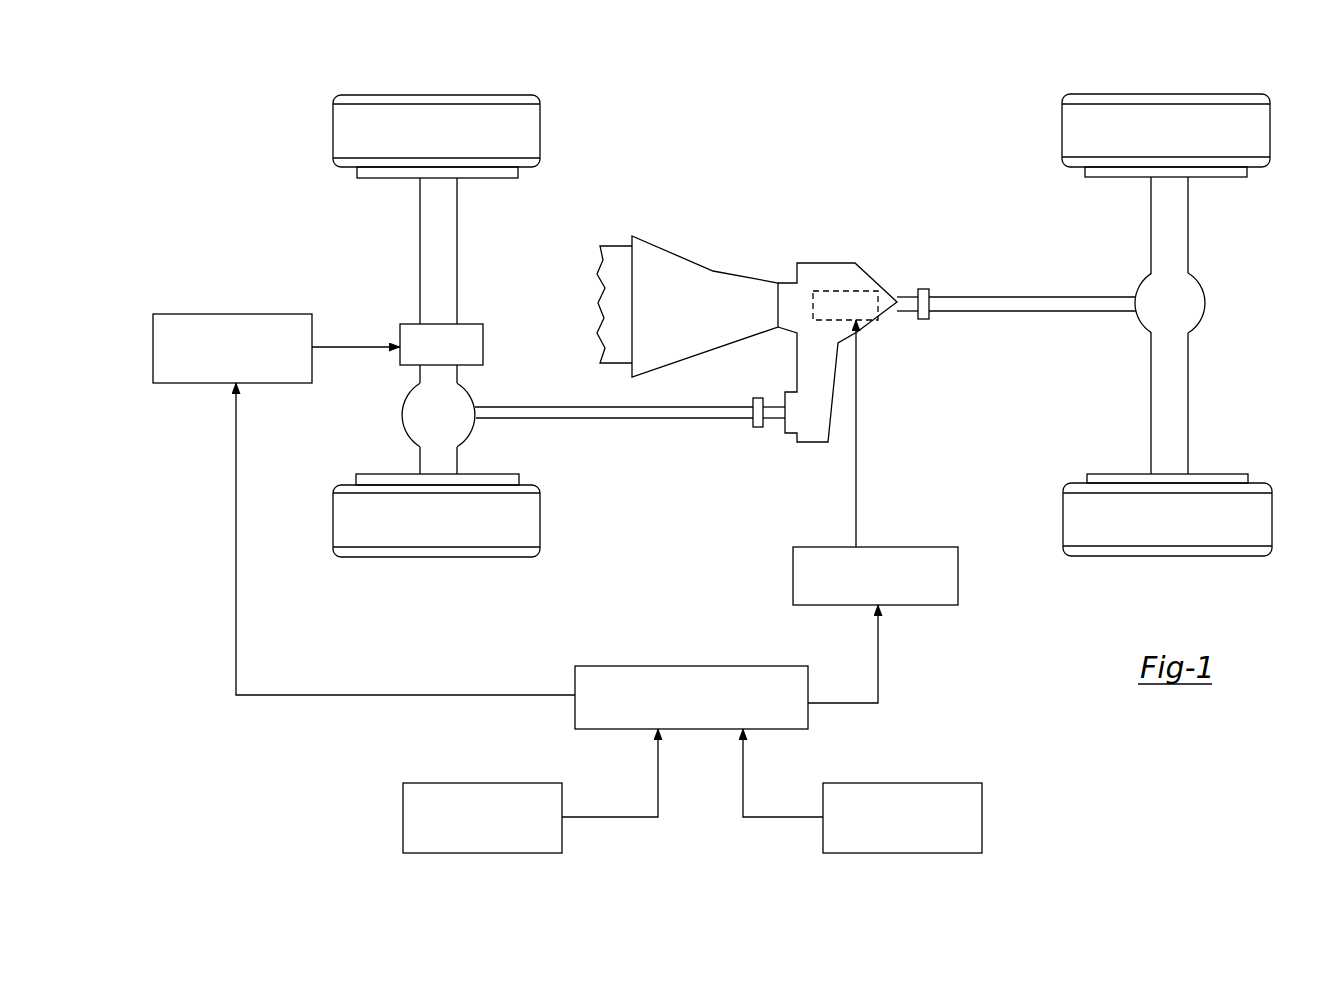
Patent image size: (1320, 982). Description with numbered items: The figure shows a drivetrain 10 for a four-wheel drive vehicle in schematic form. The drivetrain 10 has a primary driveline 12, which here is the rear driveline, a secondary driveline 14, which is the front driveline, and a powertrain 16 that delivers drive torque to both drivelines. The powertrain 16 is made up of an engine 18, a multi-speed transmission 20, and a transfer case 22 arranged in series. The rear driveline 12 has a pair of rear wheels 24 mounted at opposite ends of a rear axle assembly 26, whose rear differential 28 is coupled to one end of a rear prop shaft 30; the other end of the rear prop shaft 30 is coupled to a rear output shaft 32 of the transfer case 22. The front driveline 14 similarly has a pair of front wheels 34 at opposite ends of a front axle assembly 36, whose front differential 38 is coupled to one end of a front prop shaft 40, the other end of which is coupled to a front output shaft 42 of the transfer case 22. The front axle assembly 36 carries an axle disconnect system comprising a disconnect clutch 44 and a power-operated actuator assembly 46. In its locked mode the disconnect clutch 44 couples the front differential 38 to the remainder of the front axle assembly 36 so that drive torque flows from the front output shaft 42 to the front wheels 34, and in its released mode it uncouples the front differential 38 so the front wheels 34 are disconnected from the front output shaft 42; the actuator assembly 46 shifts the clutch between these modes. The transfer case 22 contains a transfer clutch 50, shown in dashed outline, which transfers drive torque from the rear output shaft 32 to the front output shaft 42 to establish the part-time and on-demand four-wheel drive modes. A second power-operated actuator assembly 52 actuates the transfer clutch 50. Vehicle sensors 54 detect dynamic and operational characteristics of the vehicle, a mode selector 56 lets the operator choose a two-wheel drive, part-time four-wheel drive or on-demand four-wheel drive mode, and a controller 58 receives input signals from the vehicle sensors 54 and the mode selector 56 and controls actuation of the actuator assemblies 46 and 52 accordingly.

The drivetrain 10 is at (938, 107).
The primary driveline 12 is at (1080, 270).
The secondary driveline 14 is at (600, 422).
The powertrain 16 is at (680, 250).
The engine 18 is at (610, 283).
The multi-speed transmission 20 is at (710, 318).
The transfer case 22 is at (810, 264).
The rear wheels 24 is at (1122, 136).
The rear axle assembly 26 is at (1163, 210).
The rear differential 28 is at (1177, 298).
The rear prop shaft 30 is at (1078, 303).
The rear output shaft 32 is at (921, 288).
The front wheels 34 is at (383, 130).
The front axle assembly 36 is at (437, 237).
The front differential 38 is at (415, 413).
The front prop shaft 40 is at (718, 418).
The front output shaft 42 is at (772, 422).
The disconnect clutch 44 is at (475, 340).
The power-operated actuator assembly 46 is at (195, 380).
The transfer clutch 50 is at (850, 291).
The power-operated actuator assembly 52 is at (946, 592).
The vehicle sensors 54 is at (930, 785).
The mode selector 56 is at (403, 815).
The controller 58 is at (655, 666).